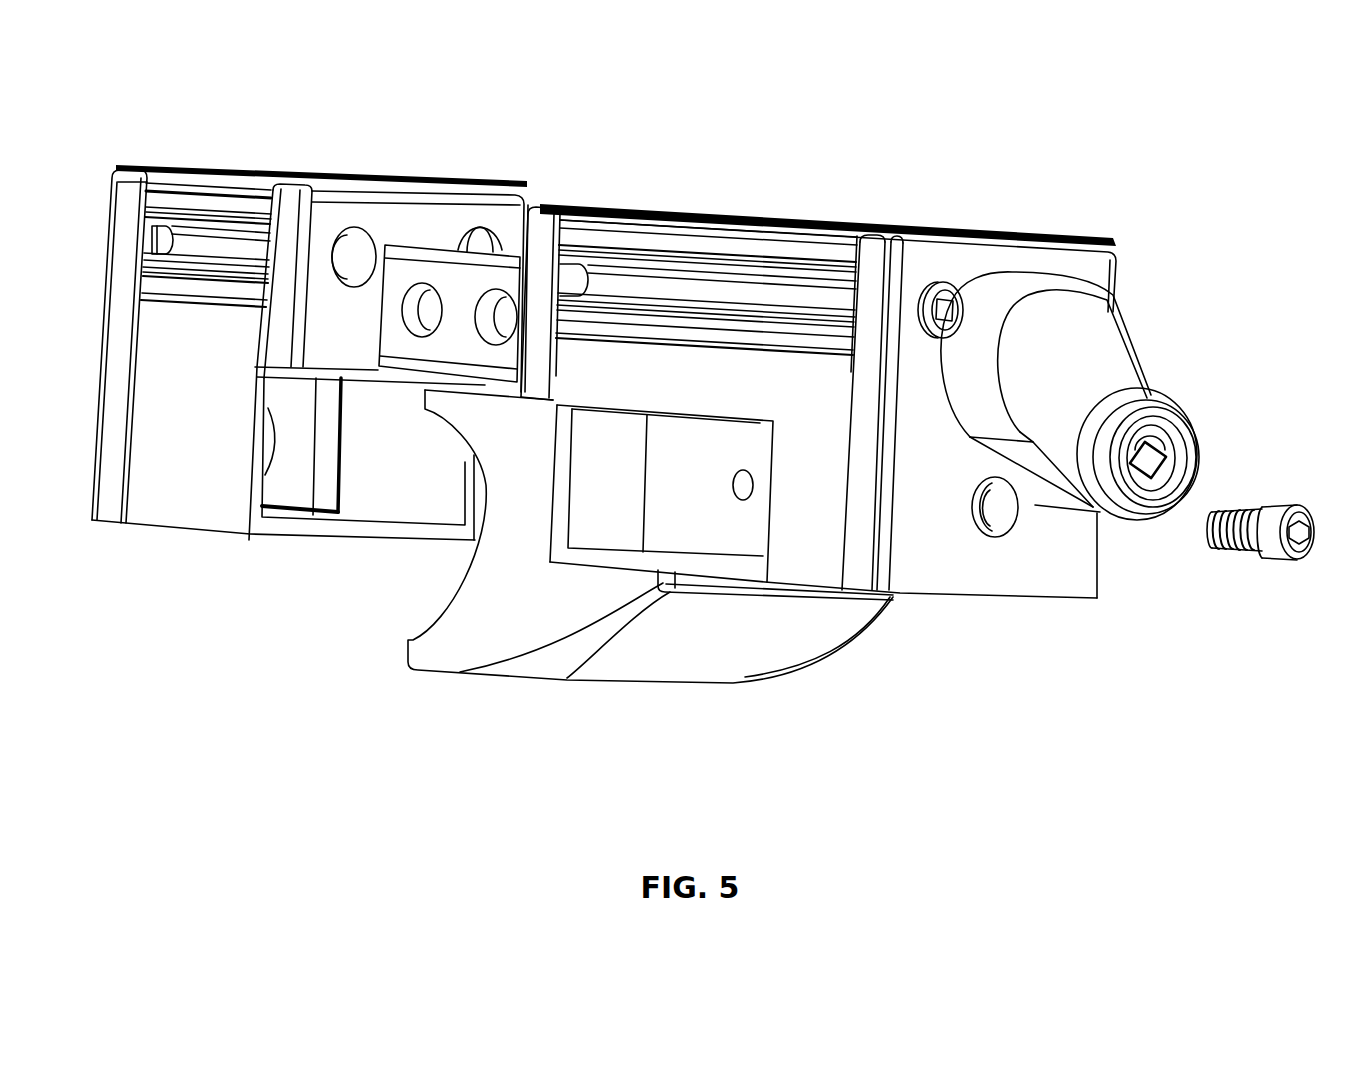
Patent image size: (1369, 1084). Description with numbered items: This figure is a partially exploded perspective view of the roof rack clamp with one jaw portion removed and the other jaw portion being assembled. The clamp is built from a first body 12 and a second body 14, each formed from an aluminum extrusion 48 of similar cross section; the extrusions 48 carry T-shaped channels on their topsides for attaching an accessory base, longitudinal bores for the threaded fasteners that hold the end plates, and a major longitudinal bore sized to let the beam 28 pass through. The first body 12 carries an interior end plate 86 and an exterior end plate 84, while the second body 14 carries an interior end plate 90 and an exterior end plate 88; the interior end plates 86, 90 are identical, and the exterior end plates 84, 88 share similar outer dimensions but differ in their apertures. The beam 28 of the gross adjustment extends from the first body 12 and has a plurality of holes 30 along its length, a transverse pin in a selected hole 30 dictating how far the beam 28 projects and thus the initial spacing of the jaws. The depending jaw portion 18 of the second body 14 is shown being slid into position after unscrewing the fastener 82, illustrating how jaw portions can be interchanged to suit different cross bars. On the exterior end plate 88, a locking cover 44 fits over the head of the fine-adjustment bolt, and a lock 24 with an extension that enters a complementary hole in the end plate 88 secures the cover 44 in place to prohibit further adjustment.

The first body 12 is at (309, 346).
The second body 14 is at (892, 373).
The jaw portion 18 is at (568, 667).
The lock 24 is at (1160, 470).
The beam 28 is at (430, 360).
The holes 30 is at (408, 336).
The locking cover 44 is at (1102, 396).
The extrusions 48 is at (208, 181).
The fastener 82 is at (1298, 513).
The exterior end plate 84 is at (128, 166).
The interior end plate 86 is at (416, 196).
The exterior end plate 88 is at (1032, 249).
The interior end plate 90 is at (547, 206).